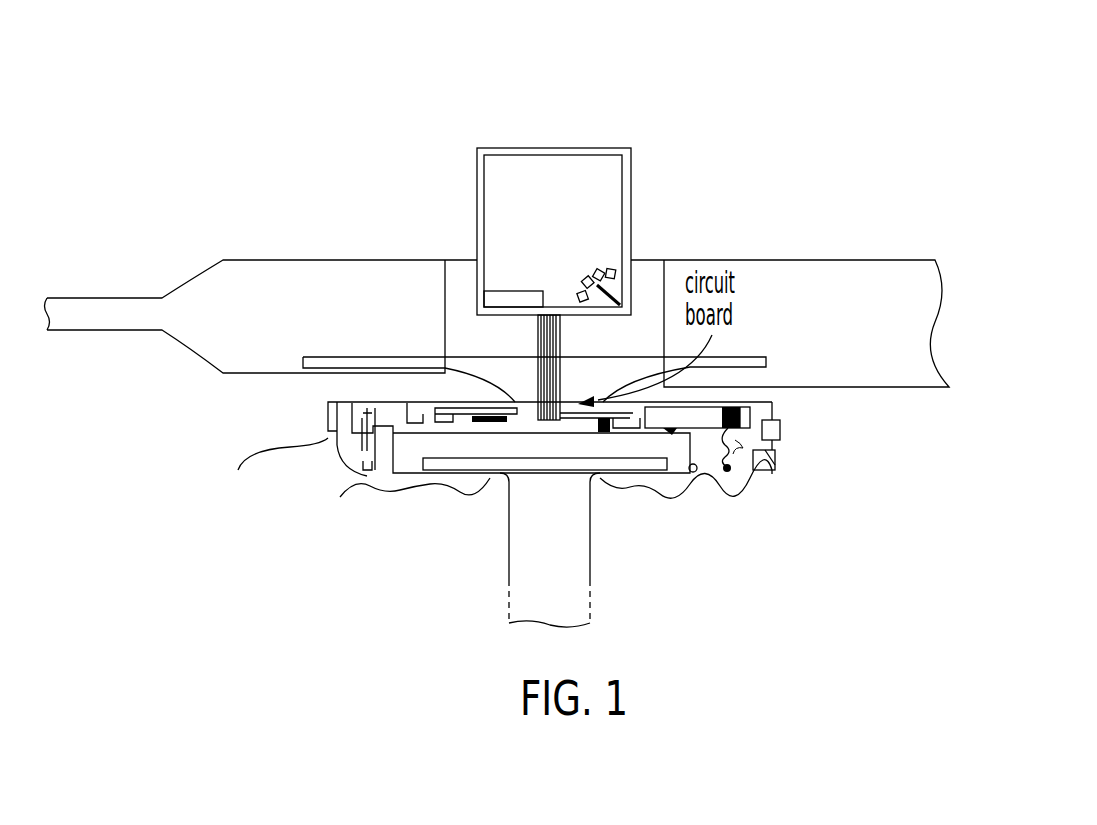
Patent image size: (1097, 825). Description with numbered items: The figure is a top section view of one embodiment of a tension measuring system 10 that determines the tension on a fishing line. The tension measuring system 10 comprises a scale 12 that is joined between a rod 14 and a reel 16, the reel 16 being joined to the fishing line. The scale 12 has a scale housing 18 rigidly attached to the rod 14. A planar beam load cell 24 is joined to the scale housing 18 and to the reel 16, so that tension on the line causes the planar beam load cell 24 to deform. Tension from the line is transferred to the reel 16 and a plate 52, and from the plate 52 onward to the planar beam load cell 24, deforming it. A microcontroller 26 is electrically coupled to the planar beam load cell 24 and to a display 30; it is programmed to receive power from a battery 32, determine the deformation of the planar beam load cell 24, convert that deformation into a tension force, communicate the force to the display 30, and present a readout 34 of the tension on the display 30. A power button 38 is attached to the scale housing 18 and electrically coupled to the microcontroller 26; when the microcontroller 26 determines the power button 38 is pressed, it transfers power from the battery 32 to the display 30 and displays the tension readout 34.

The tension measuring system 10 is at (266, 100).
The scale 12 is at (278, 533).
The rod 14 is at (328, 323).
The reel 16 is at (560, 557).
The scale housing 18 is at (727, 487).
The planar beam load cell 24 is at (750, 407).
The microcontroller 26 is at (487, 424).
The display 30 is at (648, 198).
The battery 32 is at (363, 481).
The readout 34 is at (505, 156).
The power button 38 is at (781, 432).
The plate 52 is at (673, 480).